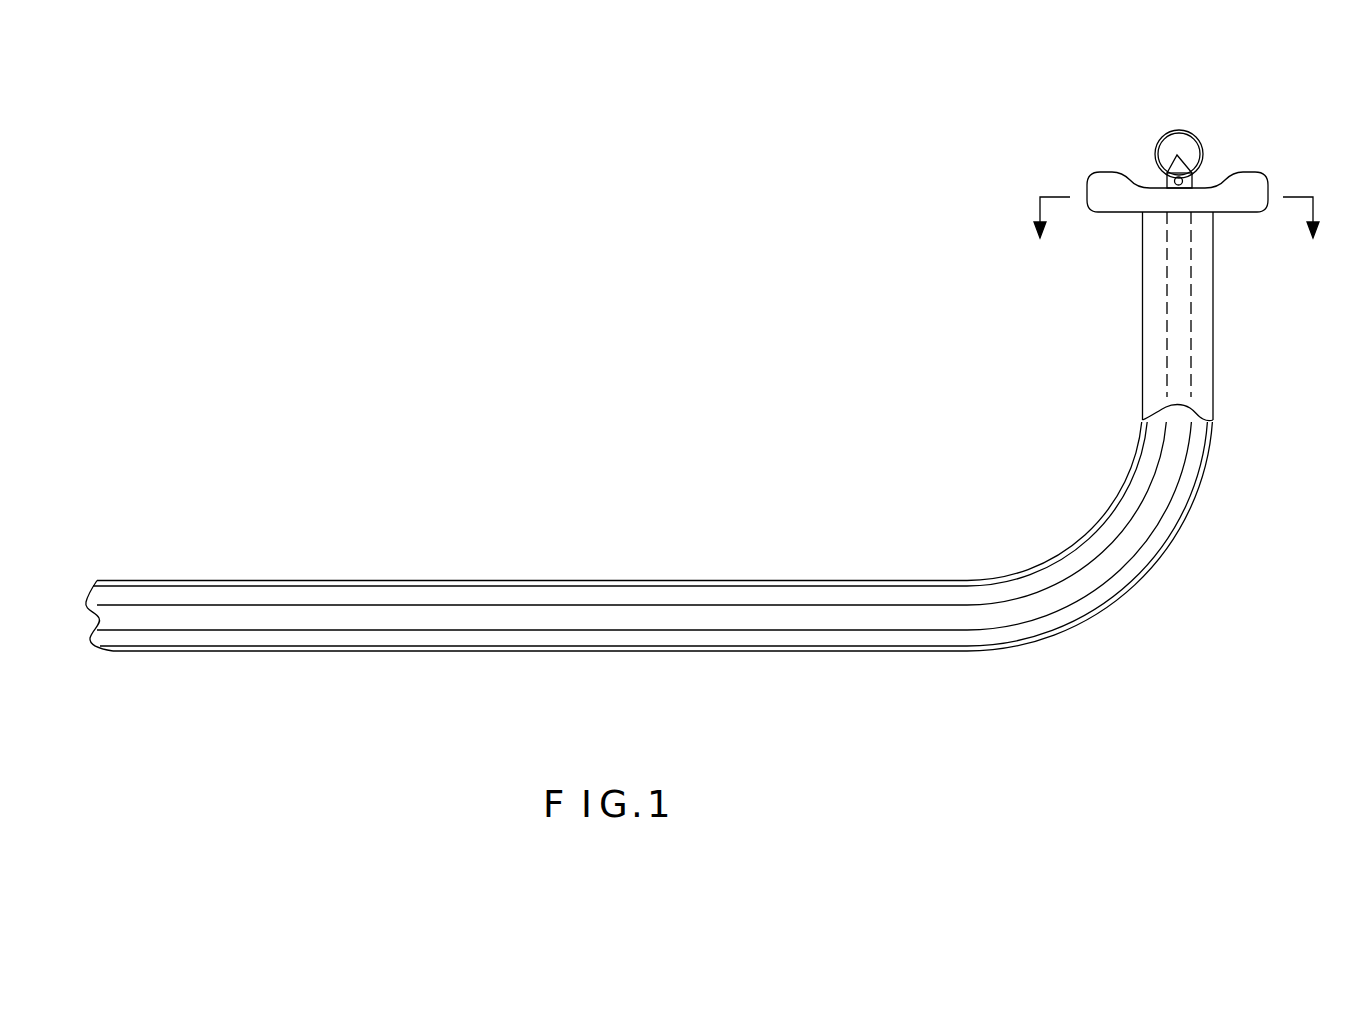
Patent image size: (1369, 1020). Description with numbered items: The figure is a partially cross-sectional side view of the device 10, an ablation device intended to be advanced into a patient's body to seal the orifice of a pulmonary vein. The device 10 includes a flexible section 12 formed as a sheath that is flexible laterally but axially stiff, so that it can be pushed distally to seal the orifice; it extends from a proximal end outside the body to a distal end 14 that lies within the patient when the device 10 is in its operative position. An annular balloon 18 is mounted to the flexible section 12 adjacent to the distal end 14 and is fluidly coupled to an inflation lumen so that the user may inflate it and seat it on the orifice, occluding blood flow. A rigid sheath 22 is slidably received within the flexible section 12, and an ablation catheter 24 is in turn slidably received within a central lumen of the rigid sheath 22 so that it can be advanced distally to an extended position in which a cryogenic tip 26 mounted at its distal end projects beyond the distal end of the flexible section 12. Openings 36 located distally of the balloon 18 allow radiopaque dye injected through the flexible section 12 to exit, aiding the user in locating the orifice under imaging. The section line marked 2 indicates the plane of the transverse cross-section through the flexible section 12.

The device 10 is at (708, 363).
The flexible section 12 is at (1213, 337).
The distal end 14 is at (1114, 189).
The annular balloon 18 is at (1253, 212).
The rigid sheath 22 is at (1177, 502).
The ablation catheter 24 is at (1078, 585).
The cryogenic tip 26 is at (1199, 150).
The openings 36 is at (1165, 187).
The section line 2- 2 is at (1176, 202).